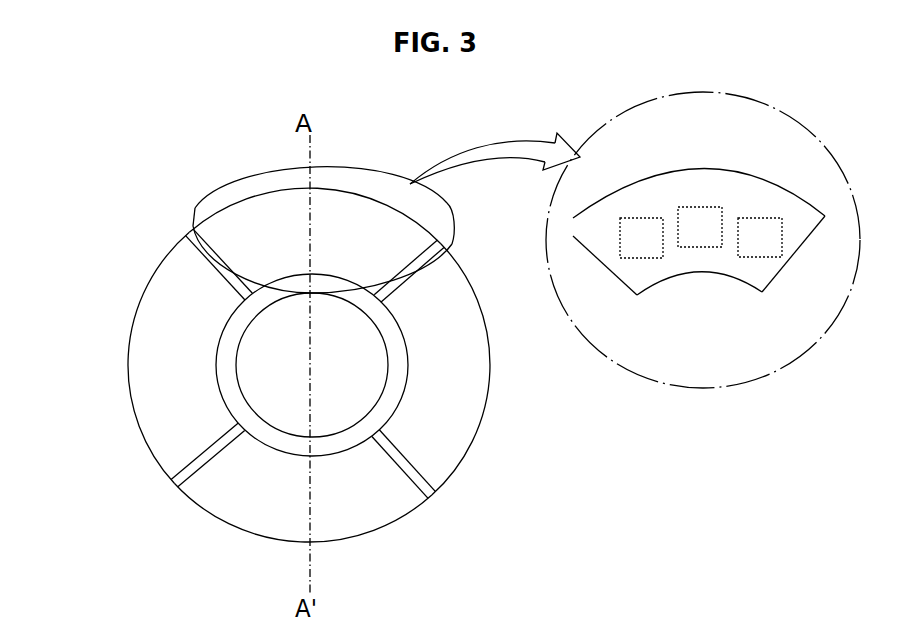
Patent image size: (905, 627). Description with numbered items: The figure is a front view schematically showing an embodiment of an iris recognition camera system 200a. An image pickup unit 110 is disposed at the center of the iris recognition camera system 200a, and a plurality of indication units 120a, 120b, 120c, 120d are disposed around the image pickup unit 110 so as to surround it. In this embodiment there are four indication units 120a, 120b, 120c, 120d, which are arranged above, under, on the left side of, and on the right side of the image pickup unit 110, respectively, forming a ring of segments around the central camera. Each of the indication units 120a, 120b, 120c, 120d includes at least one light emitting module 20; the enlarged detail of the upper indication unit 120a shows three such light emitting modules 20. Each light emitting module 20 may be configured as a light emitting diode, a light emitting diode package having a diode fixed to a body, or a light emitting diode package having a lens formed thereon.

The iris recognition camera system 200a is at (80, 141).
The image pickup unit 110 is at (345, 384).
The indication unit 120a is at (363, 230).
The indication unit 120b is at (157, 352).
The indication unit 120c is at (248, 500).
The indication unit 120d is at (448, 424).
The light emitting module 20 is at (647, 223).